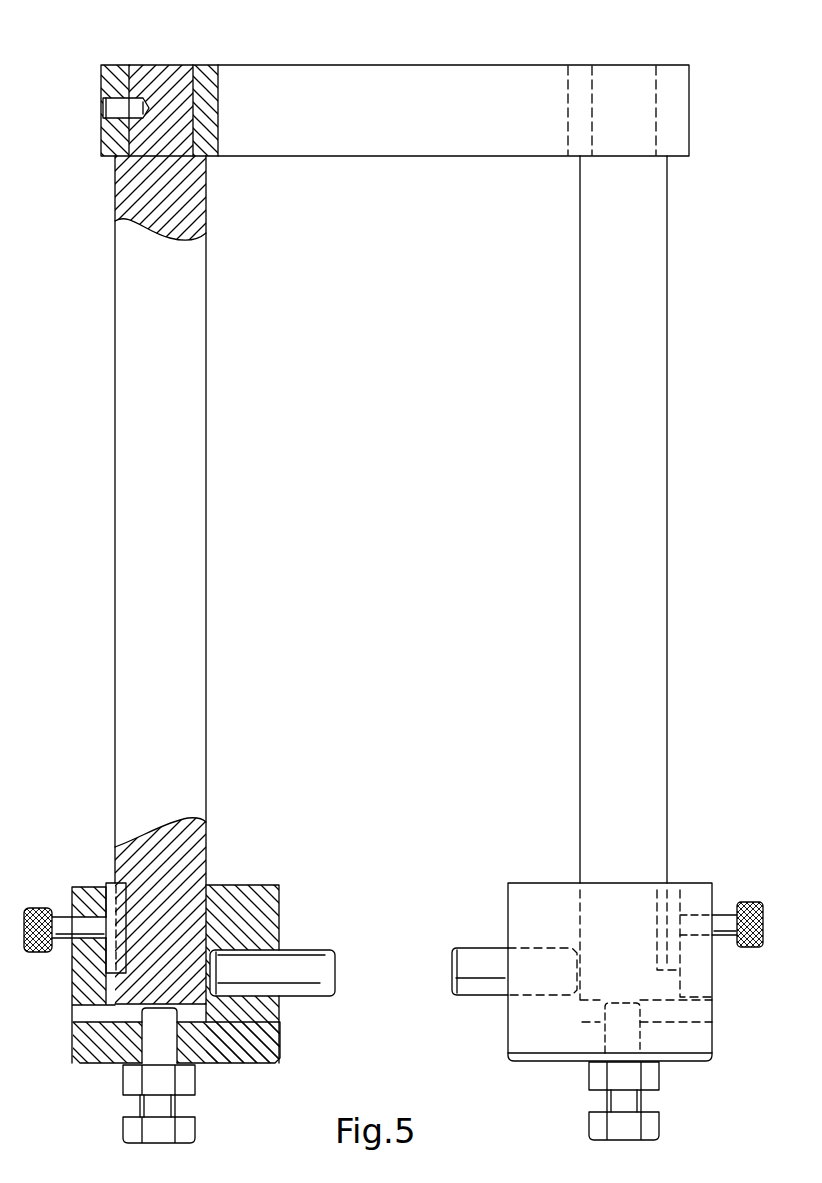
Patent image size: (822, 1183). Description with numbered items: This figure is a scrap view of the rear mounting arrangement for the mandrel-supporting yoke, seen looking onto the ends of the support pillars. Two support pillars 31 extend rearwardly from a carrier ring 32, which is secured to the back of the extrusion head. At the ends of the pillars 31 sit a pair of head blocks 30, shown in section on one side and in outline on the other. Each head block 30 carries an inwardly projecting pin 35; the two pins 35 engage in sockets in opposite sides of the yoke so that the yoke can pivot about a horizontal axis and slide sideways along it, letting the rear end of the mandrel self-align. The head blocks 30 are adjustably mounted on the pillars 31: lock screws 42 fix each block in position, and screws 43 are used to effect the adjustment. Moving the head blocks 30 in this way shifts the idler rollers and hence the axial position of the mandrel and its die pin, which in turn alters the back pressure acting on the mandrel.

The head block 30 is at (90, 1052).
The support pillar 31 is at (122, 312).
The carrier ring 32 is at (517, 70).
The pin 35 is at (335, 996).
The lock screw 42 is at (40, 907).
The screw 43 is at (190, 1127).